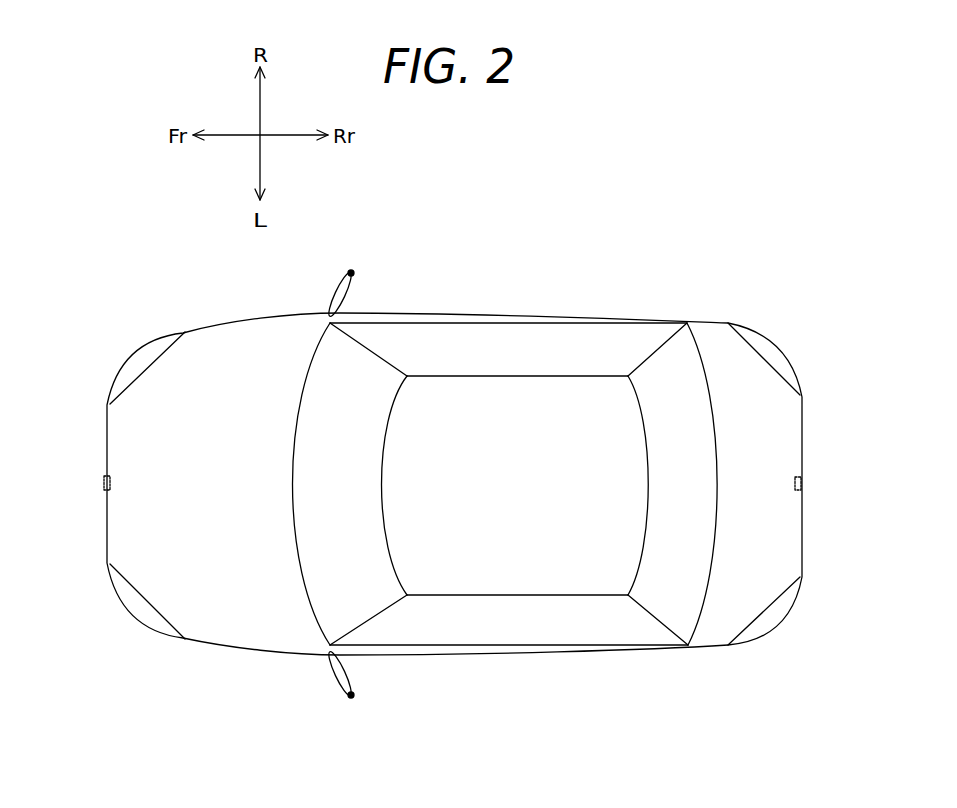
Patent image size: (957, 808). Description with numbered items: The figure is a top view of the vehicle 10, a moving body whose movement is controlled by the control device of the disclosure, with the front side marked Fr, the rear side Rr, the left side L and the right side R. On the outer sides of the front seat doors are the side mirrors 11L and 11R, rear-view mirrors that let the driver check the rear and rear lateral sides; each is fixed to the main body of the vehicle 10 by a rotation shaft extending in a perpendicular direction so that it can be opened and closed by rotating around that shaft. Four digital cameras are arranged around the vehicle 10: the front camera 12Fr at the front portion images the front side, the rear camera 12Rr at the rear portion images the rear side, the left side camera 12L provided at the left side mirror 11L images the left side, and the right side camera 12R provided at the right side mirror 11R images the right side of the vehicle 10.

The vehicle 10 is at (606, 317).
The right side mirror 11R is at (335, 299).
The left side mirror 11L is at (335, 677).
The right side camera 12R is at (357, 274).
The left side camera 12L is at (356, 691).
The front camera 12Fr is at (103, 483).
The rear camera 12Rr is at (802, 484).